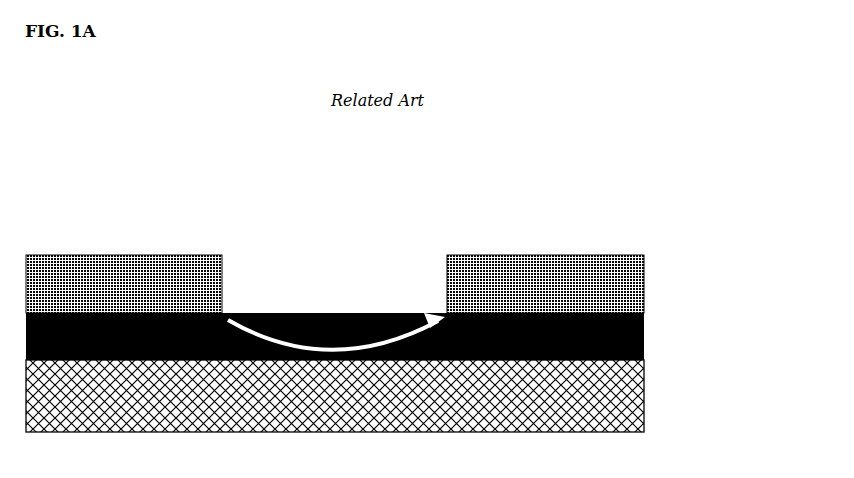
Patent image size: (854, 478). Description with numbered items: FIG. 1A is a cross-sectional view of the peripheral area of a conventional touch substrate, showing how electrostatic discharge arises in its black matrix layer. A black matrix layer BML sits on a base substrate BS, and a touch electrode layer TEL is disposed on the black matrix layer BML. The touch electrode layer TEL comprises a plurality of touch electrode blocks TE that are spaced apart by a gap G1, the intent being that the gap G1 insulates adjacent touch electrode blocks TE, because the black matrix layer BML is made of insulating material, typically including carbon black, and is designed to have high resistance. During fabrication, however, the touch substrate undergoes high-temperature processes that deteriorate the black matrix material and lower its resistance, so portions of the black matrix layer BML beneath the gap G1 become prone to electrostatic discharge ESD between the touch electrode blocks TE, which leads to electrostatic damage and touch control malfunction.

The touch electrode block TE is at (335, 284).
The touch electrode layer TEL is at (644, 288).
The black matrix layer BML is at (335, 338).
The base substrate BS is at (335, 396).
The gap G1 is at (447, 285).
The electrostatic discharge ESD is at (430, 315).